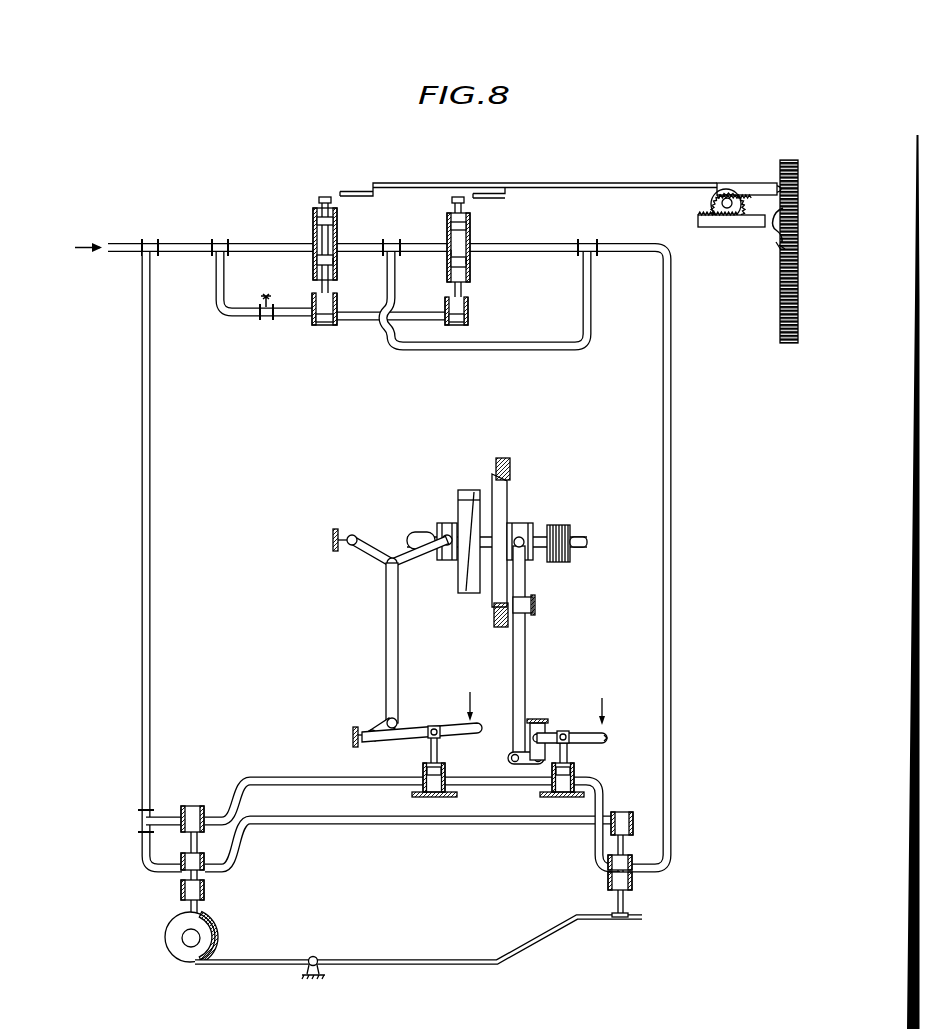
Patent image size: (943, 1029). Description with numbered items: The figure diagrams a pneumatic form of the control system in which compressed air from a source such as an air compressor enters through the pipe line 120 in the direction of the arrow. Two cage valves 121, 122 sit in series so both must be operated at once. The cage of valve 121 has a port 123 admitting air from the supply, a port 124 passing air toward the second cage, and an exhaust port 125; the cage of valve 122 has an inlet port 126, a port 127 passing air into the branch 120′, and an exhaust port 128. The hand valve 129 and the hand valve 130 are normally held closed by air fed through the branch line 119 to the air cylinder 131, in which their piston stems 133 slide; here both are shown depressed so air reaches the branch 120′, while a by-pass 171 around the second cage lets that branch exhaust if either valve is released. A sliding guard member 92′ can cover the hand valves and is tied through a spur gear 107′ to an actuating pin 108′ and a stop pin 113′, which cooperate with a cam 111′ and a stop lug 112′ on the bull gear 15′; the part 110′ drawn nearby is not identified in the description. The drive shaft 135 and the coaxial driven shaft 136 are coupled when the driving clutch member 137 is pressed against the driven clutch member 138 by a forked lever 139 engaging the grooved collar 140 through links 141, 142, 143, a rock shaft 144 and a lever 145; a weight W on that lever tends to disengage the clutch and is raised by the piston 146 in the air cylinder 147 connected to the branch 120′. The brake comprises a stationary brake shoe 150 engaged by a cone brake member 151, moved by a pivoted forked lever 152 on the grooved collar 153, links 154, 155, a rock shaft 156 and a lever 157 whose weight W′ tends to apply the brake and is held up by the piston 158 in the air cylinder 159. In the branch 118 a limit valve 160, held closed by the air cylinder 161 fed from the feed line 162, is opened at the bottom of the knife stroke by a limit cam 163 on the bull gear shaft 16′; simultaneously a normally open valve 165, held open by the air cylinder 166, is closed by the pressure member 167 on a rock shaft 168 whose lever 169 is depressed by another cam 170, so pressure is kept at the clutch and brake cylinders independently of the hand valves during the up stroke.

The pipe line 120 is at (108, 244).
The branch of the pipe line 120′ is at (575, 250).
The branch of the pipe line 118 is at (143, 548).
The branch line 119 is at (215, 320).
The by-pass 171 is at (545, 348).
The feed line 162 is at (352, 832).
The cage valve 121 is at (313, 216).
The cage valve 122 is at (447, 216).
The port 123 is at (318, 262).
The port 124 is at (338, 240).
The exhaust port 125 is at (313, 228).
The port 126 is at (447, 258).
The port 127 is at (472, 262).
The exhaust port 128 is at (470, 226).
The hand valve 129 is at (334, 265).
The hand valve 130 is at (470, 248).
The air cylinder 131 is at (325, 330).
The piston stems 133 is at (321, 290).
The guard member 92′ is at (345, 190).
The actuating pin 108′ is at (735, 185).
The spur gear 107′ is at (712, 207).
The stop pin 113′ is at (747, 227).
The cam 111′ is at (786, 214).
The stop lug 112′ is at (786, 247).
The pivot 110′ is at (778, 248).
The bull gear 15′ is at (799, 312).
The drive shaft 135 is at (588, 545).
The driven shaft 136 is at (410, 533).
The driving clutch member 137 is at (468, 490).
The driven clutch member 138 is at (458, 510).
The forked lever 139 is at (418, 560).
The grooved collar 140 is at (447, 548).
The link 141 is at (370, 551).
The link 142 is at (386, 650).
The link 143 is at (392, 718).
The rock shaft 144 is at (368, 732).
The lever 145 is at (428, 730).
The piston 146 is at (440, 765).
The air cylinder 147 is at (430, 797).
The stationary brake shoe 150 is at (510, 470).
The cone brake member 151 is at (505, 510).
The pivoted forked lever 152 is at (526, 590).
The grooved collar 153 is at (533, 528).
The link 154 is at (520, 766).
The link 155 is at (575, 723).
The rock shaft 156 is at (540, 720).
The lever 157 is at (607, 740).
The piston 158 is at (575, 780).
The air cylinder 159 is at (562, 797).
The limit valve 160 is at (180, 892).
The air cylinder 161 is at (193, 806).
The limit cam 163 is at (166, 937).
The bull gear shaft 16′ is at (190, 942).
The normally opened valve 165 is at (635, 882).
The air cylinder 166 is at (640, 810).
The pressure member 167 is at (618, 920).
The rock shaft 168 is at (320, 966).
The lever 169 is at (262, 968).
The cam 170 is at (217, 937).
The weight W is at (471, 693).
The weight W′ is at (610, 698).